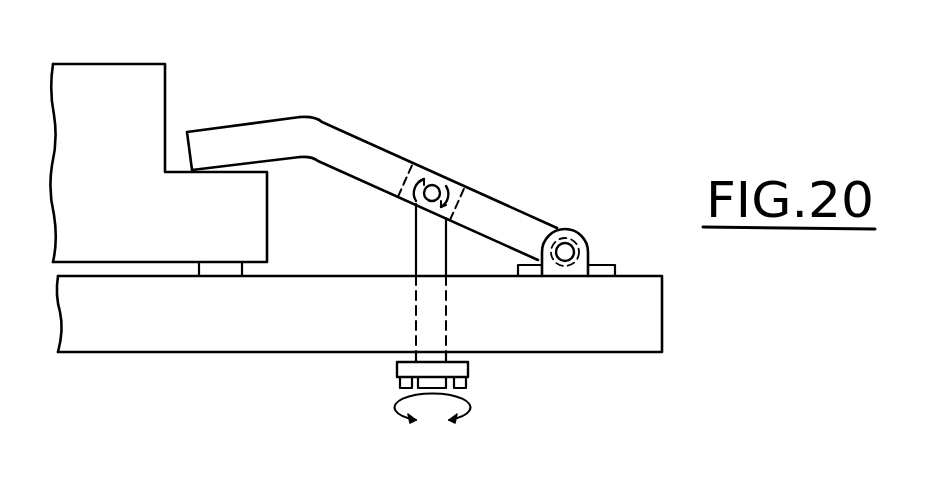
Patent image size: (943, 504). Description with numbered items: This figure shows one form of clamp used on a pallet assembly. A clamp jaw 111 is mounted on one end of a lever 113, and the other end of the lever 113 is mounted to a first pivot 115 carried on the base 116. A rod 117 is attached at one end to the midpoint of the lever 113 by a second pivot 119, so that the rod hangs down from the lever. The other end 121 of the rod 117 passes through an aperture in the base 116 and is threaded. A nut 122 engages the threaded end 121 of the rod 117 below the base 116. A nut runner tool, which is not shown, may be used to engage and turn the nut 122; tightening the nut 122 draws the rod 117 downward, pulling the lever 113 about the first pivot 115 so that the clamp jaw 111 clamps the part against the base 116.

The clamp jaw 111 is at (203, 145).
The lever 113 is at (335, 132).
The first pivot 115 is at (567, 250).
The base 116 is at (645, 310).
The rod 117 is at (423, 240).
The second pivot 119 is at (437, 188).
The threaded end of the rod 121 is at (417, 357).
The nut 122 is at (467, 370).